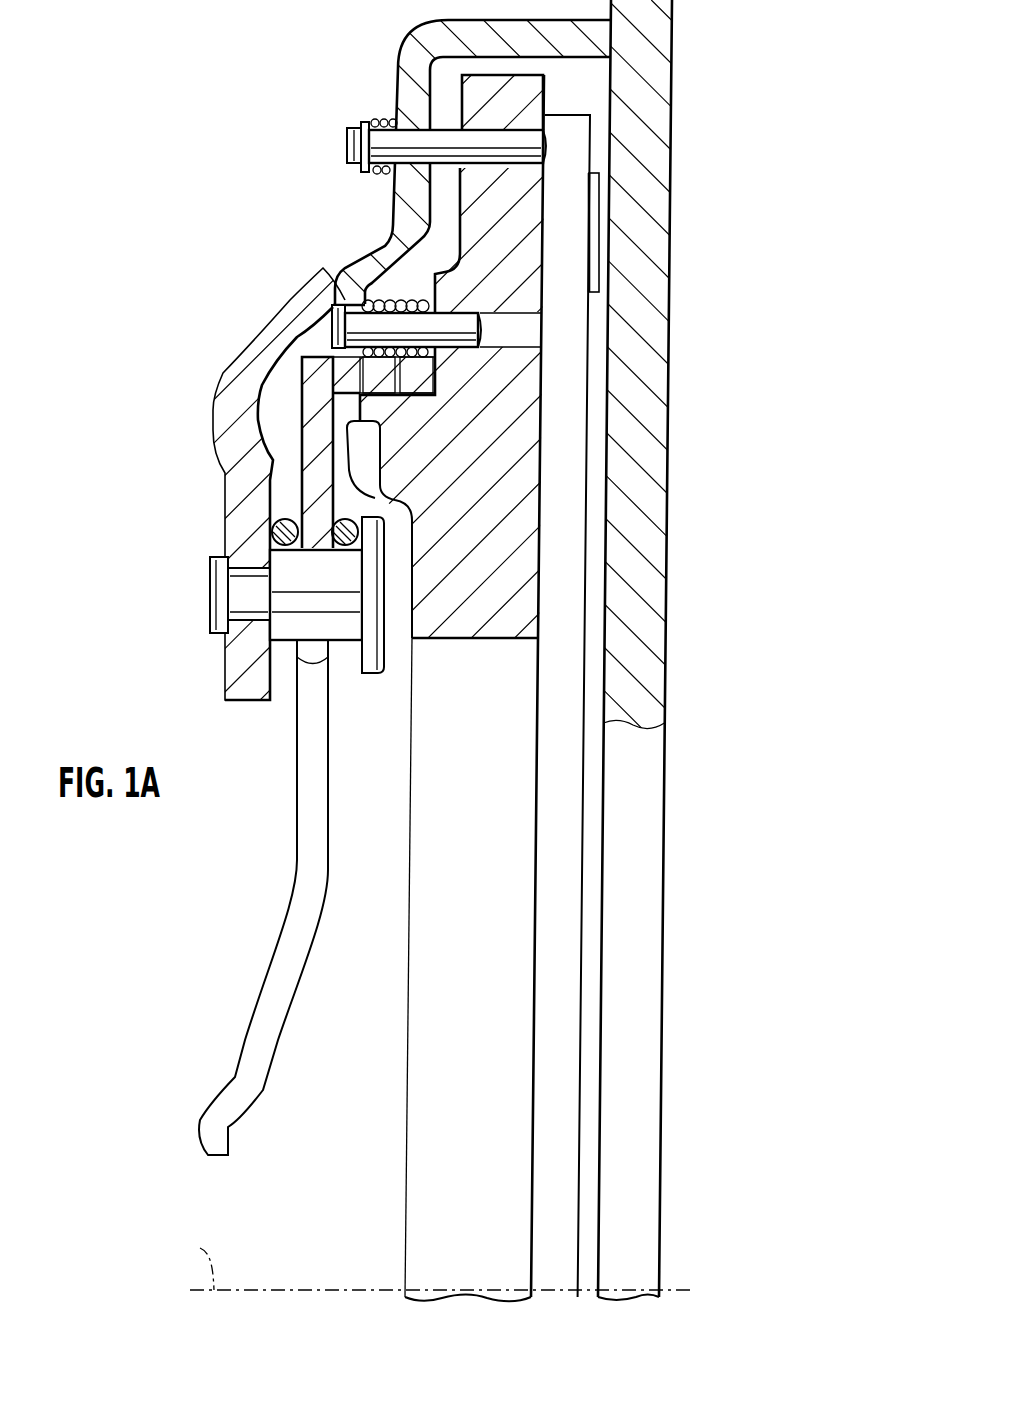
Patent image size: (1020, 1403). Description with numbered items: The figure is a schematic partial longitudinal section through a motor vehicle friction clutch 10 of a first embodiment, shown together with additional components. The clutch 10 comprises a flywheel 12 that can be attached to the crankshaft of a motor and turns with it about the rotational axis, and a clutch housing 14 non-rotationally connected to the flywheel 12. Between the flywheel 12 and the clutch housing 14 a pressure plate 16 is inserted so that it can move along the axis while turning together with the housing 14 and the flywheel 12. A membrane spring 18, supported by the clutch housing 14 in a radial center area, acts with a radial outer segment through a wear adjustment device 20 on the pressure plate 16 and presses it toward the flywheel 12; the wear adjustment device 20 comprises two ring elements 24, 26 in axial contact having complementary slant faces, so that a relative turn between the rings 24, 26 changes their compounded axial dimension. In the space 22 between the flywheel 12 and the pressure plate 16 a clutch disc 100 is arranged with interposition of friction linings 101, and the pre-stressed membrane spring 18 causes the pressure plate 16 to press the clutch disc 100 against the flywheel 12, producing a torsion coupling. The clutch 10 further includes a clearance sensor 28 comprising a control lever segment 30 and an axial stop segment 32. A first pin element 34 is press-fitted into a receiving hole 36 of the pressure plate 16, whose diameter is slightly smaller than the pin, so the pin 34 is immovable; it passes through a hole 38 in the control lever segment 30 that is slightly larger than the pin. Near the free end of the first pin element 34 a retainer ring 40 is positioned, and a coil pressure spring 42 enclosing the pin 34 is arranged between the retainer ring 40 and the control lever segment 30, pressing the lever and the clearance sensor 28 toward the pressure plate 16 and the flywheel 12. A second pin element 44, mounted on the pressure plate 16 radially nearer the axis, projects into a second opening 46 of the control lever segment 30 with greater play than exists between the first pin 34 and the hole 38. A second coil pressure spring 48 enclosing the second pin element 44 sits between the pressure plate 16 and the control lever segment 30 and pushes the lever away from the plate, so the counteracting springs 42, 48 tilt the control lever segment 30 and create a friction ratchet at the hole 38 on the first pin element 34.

The motor vehicle friction clutch 10 is at (310, 210).
The flywheel 12 is at (638, 697).
The clutch housing 14 is at (227, 373).
The pressure plate 16 is at (410, 1078).
The membrane spring 18 is at (280, 965).
The wear adjustment device 20 is at (436, 432).
The space 22 is at (566, 322).
The ring element 24 is at (392, 385).
The ring element 26 is at (383, 396).
The clearance sensor 28 is at (298, 105).
The control lever segment 30 is at (372, 257).
The axial stop segment 32 is at (583, 40).
The first pin element 34 is at (348, 146).
The receiving hole 36 is at (513, 125).
The hole 38 is at (395, 112).
The retainer ring 40 is at (364, 120).
The coil pressure spring 42 is at (382, 173).
The second pin element 44 is at (338, 327).
The second opening 46 is at (348, 303).
The second coil pressure spring 48 is at (415, 302).
The clutch disc 100 is at (575, 142).
The friction linings 101 is at (598, 206).